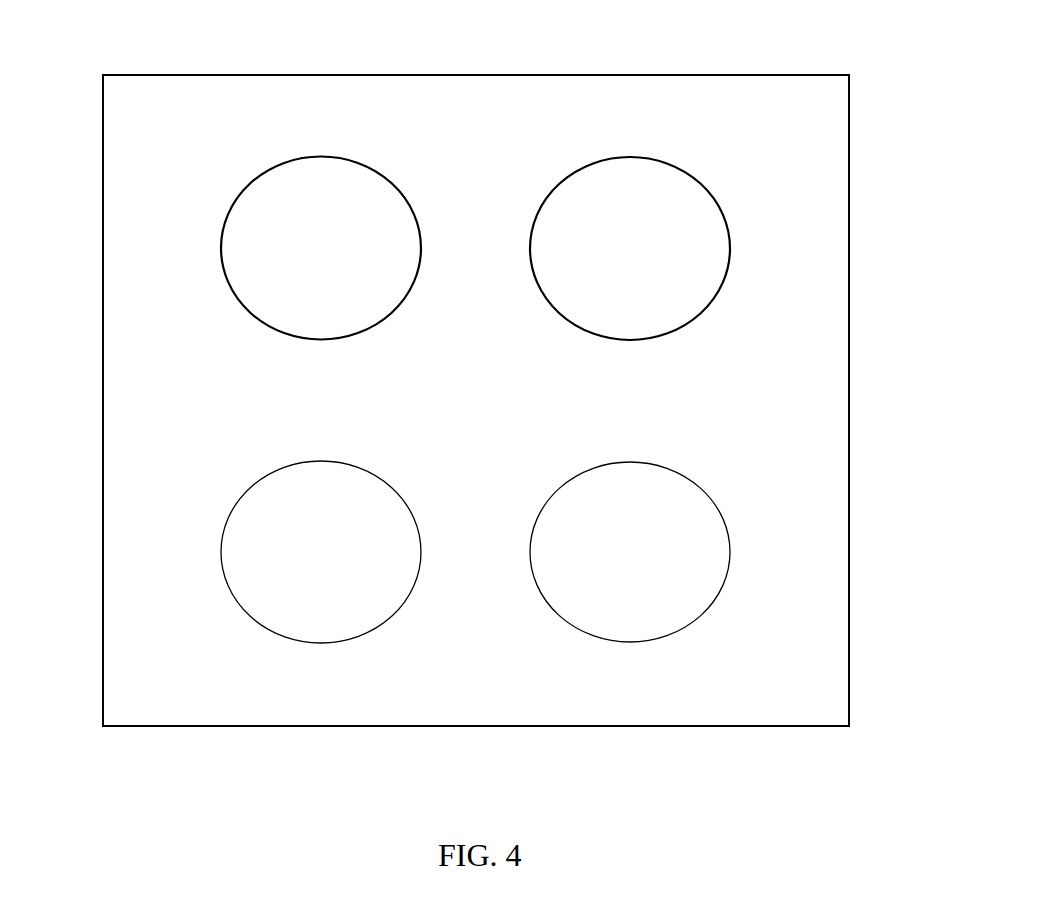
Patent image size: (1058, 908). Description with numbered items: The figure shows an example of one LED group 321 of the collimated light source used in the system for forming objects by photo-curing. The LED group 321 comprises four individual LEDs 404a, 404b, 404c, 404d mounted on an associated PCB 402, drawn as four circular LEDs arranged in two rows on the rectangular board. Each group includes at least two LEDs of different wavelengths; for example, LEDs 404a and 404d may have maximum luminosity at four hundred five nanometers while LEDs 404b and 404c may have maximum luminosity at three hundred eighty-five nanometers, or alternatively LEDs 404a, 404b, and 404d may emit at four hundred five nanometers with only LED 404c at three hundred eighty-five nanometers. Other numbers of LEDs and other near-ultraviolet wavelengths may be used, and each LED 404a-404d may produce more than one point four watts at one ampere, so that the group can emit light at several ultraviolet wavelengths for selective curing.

The LED group 321 is at (925, 66).
The PCB 402 is at (789, 685).
The LED 404a is at (227, 249).
The LED 404b is at (720, 234).
The LED 404c is at (232, 556).
The LED 404d is at (723, 555).